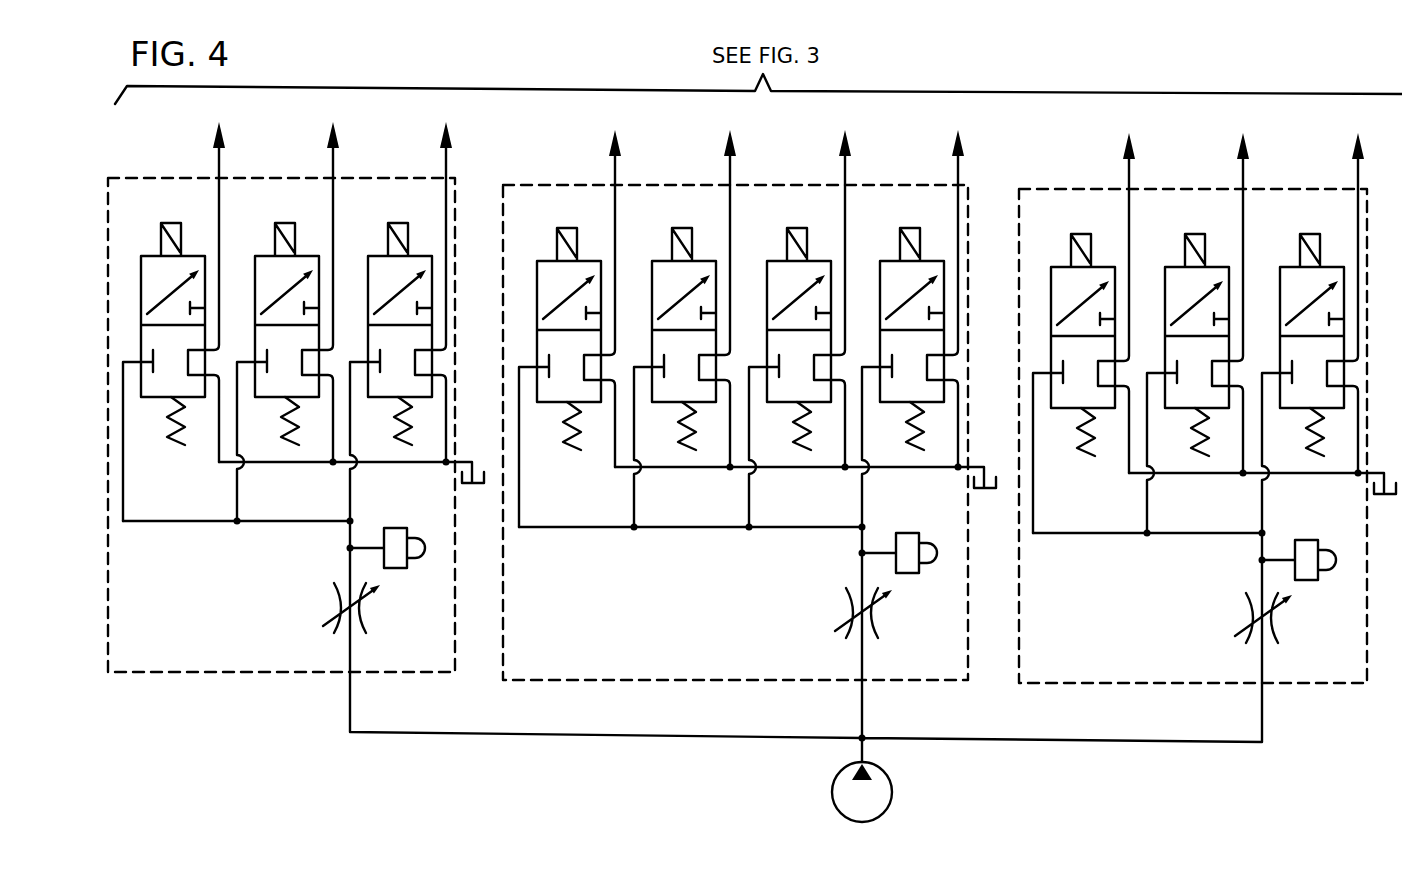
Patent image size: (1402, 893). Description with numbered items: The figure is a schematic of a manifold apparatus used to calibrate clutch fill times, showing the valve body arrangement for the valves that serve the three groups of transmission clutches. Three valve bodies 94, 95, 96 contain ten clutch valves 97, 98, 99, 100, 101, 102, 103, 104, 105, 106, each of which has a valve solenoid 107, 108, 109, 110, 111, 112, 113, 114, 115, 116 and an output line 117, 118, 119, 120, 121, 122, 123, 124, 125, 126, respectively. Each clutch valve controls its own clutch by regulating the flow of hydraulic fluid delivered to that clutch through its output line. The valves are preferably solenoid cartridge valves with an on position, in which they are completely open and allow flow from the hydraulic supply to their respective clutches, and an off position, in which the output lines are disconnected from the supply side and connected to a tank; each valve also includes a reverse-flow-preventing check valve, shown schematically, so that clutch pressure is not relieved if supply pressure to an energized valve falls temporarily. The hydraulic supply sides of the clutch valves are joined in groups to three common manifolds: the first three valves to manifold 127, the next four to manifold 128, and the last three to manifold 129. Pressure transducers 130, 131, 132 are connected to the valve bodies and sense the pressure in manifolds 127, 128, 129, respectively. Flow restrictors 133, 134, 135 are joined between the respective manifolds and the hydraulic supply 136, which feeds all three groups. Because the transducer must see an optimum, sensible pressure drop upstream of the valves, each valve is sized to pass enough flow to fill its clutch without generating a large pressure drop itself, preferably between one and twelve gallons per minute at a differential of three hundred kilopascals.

The valve body 94 is at (197, 682).
The valve body 95 is at (607, 694).
The valve body 96 is at (1106, 698).
The clutch valve 97 is at (159, 424).
The clutch valve 98 is at (271, 424).
The clutch valve 99 is at (385, 424).
The clutch valve 100 is at (552, 429).
The clutch valve 101 is at (668, 429).
The clutch valve 102 is at (783, 429).
The clutch valve 103 is at (896, 429).
The clutch valve 104 is at (1065, 436).
The clutch valve 105 is at (1180, 436).
The clutch valve 106 is at (1295, 436).
The valve solenoid 107 is at (168, 364).
The valve solenoid 108 is at (282, 364).
The valve solenoid 109 is at (395, 364).
The valve solenoid 110 is at (564, 370).
The valve solenoid 111 is at (679, 370).
The valve solenoid 112 is at (794, 370).
The valve solenoid 113 is at (907, 370).
The valve solenoid 114 is at (1078, 376).
The valve solenoid 115 is at (1192, 376).
The valve solenoid 116 is at (1307, 376).
The output line 117 is at (199, 224).
The output line 118 is at (310, 224).
The output line 119 is at (425, 224).
The output line 120 is at (593, 229).
The output line 121 is at (706, 229).
The output line 122 is at (821, 229).
The output line 123 is at (936, 229).
The output line 124 is at (1103, 234).
The output line 125 is at (1218, 234).
The output line 126 is at (1333, 234).
The common manifold 127 is at (168, 522).
The common manifold 128 is at (672, 530).
The common manifold 129 is at (1080, 535).
The pressure transducer 130 is at (400, 528).
The pressure transducer 131 is at (910, 534).
The pressure transducer 132 is at (1306, 540).
The flow restrictor 133 is at (365, 617).
The flow restrictor 134 is at (877, 622).
The flow restrictor 135 is at (1277, 628).
The hydraulic supply 136 is at (891, 782).